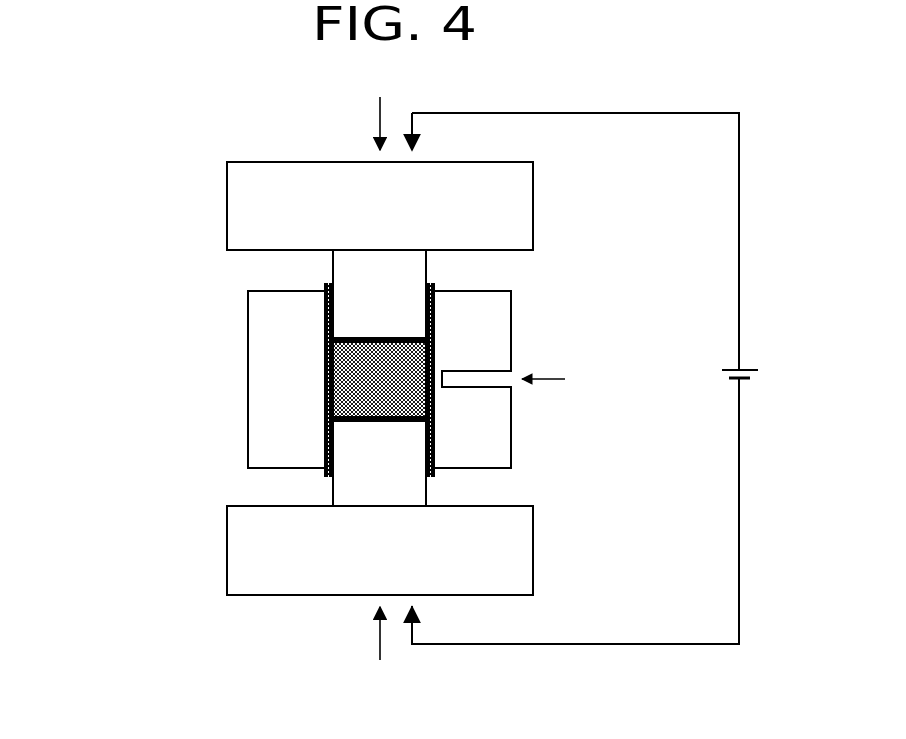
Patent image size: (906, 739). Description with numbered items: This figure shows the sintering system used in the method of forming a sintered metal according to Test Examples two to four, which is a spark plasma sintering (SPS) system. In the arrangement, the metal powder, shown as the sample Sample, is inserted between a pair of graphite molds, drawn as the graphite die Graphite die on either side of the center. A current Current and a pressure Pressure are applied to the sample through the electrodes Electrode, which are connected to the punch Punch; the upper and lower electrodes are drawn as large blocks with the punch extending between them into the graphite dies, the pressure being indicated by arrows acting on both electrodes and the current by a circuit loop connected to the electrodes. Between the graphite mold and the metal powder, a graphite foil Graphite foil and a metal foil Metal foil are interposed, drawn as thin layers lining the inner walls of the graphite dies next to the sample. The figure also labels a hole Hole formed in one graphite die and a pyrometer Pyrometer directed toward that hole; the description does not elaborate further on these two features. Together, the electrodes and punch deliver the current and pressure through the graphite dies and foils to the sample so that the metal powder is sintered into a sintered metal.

The electrode Electrode is at (240, 552).
The punch Punch is at (418, 271).
The graphite die Graphite die is at (264, 325).
The hole Hole is at (512, 375).
The graphite foil Graphite foil is at (324, 357).
The metal foil Metal foil is at (326, 388).
The sample Sample is at (345, 400).
The pyrometer Pyrometer is at (600, 378).
The current Current is at (736, 382).
The pressure Pressure is at (378, 378).